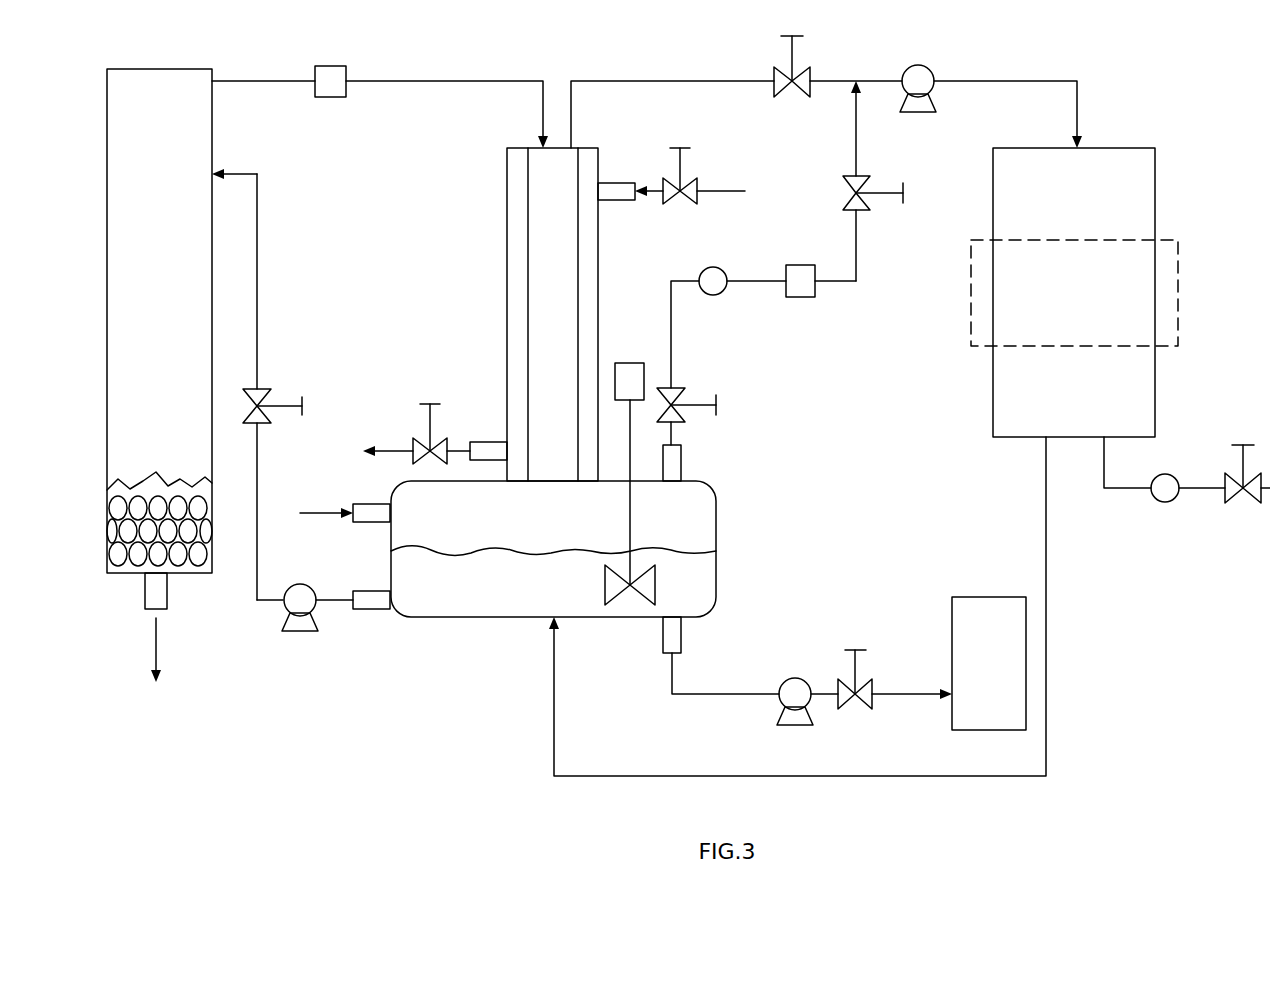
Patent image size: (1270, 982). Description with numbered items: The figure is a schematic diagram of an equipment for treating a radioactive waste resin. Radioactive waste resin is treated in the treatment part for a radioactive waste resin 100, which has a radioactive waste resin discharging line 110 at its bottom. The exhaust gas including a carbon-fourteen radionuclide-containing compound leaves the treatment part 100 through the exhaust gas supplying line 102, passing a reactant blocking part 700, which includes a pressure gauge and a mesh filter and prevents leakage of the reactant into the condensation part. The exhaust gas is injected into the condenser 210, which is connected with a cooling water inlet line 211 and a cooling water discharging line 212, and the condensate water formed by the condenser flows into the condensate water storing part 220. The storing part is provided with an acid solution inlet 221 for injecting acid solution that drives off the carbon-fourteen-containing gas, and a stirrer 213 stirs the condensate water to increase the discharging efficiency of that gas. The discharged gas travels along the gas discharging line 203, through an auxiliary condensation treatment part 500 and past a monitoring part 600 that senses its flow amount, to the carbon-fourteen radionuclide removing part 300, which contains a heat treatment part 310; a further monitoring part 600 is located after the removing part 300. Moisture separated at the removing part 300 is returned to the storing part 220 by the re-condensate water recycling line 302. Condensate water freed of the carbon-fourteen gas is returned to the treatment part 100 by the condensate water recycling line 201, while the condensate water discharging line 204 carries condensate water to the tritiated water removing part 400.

The treatment part for a radioactive waste resin 100 is at (161, 68).
The radioactive waste resin discharging line 110 is at (158, 646).
The reactant blocking part 700 is at (335, 66).
The exhaust gas supplying line 102 is at (444, 80).
The condensate water recycling line 201 is at (252, 172).
The acid solution inlet 221 is at (307, 512).
The condenser 210 is at (507, 191).
The cooling water inlet line 211 is at (719, 190).
The cooling water discharging line 212 is at (395, 450).
The stirrer 213 is at (630, 362).
The condensate water storing part 220 is at (706, 482).
The discharging line of a gas including a C-14 radionuclide-containing compound 203 is at (667, 80).
The auxiliary condensation treatment part 500 is at (801, 265).
The monitoring part 600 is at (715, 267).
The C-14 radionuclide removing part 300 is at (1157, 190).
The heat treatment part 310 is at (1180, 293).
The re-condensate water recycling line 302 is at (716, 776).
The tritiated water removing part 400 is at (990, 597).
The condensate water discharging line 204 is at (910, 694).